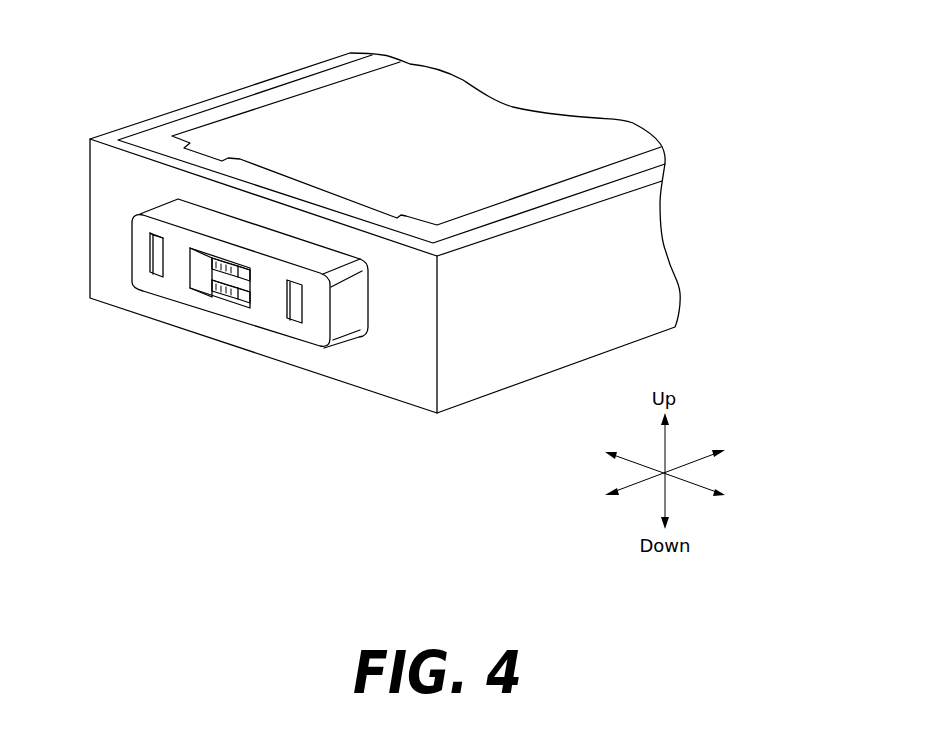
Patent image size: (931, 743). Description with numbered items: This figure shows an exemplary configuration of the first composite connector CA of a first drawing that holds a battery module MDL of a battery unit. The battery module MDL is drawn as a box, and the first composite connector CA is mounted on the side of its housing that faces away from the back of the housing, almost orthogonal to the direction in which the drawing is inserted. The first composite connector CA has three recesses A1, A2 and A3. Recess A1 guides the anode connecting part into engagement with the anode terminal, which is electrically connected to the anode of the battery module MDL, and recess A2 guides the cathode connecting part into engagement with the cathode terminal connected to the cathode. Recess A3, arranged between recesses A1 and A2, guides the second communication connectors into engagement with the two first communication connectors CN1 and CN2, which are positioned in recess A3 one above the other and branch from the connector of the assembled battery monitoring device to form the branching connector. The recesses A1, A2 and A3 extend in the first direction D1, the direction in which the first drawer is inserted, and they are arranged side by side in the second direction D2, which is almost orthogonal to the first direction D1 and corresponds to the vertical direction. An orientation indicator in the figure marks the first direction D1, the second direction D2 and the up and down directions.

The battery module MDL is at (410, 64).
The first composite connector CA is at (348, 334).
The communication connector CN1 is at (221, 259).
The communication connector CN2 is at (212, 293).
The recess A1 is at (297, 320).
The recess A2 is at (158, 270).
The recess A3 is at (216, 260).
The first direction D1 is at (680, 468).
The second direction D2 is at (680, 479).